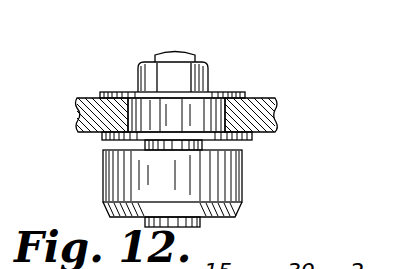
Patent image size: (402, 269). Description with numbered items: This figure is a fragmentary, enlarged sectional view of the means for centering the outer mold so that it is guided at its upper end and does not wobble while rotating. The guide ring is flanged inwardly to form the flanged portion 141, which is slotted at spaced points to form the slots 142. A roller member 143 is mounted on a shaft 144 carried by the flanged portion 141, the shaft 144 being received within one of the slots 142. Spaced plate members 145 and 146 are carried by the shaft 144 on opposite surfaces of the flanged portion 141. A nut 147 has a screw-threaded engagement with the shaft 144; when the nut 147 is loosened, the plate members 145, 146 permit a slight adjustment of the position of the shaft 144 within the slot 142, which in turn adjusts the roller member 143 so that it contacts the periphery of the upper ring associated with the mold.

The flanged portion 141 is at (258, 115).
The slots 142 is at (250, 96).
The roller members 143 is at (206, 178).
The shafts 144 is at (205, 145).
The plate member 145 is at (118, 93).
The plate member 146 is at (100, 140).
The nuts 147 is at (173, 73).